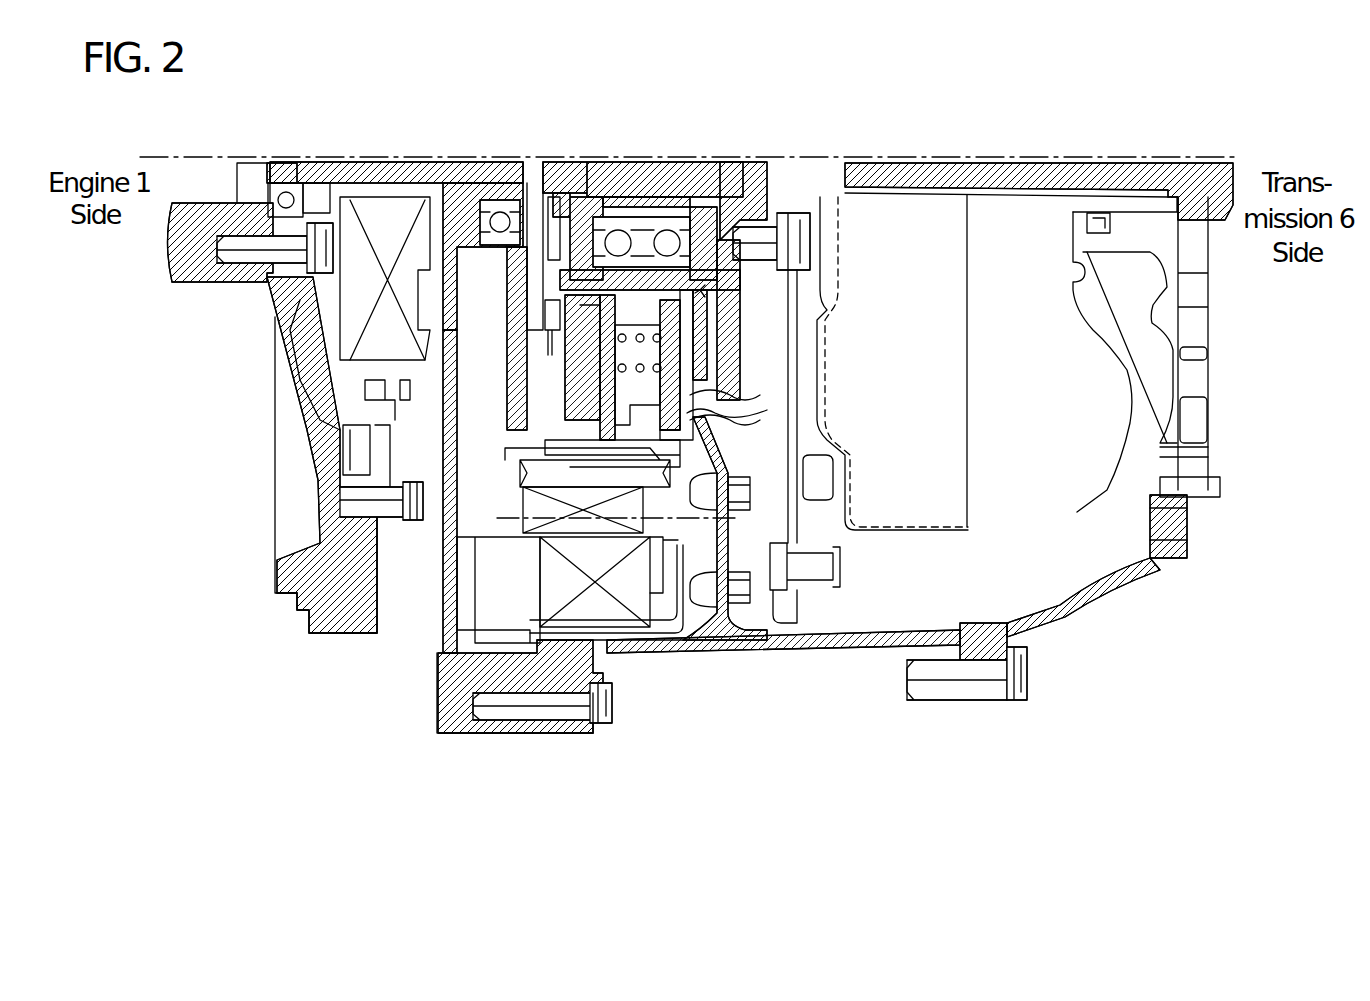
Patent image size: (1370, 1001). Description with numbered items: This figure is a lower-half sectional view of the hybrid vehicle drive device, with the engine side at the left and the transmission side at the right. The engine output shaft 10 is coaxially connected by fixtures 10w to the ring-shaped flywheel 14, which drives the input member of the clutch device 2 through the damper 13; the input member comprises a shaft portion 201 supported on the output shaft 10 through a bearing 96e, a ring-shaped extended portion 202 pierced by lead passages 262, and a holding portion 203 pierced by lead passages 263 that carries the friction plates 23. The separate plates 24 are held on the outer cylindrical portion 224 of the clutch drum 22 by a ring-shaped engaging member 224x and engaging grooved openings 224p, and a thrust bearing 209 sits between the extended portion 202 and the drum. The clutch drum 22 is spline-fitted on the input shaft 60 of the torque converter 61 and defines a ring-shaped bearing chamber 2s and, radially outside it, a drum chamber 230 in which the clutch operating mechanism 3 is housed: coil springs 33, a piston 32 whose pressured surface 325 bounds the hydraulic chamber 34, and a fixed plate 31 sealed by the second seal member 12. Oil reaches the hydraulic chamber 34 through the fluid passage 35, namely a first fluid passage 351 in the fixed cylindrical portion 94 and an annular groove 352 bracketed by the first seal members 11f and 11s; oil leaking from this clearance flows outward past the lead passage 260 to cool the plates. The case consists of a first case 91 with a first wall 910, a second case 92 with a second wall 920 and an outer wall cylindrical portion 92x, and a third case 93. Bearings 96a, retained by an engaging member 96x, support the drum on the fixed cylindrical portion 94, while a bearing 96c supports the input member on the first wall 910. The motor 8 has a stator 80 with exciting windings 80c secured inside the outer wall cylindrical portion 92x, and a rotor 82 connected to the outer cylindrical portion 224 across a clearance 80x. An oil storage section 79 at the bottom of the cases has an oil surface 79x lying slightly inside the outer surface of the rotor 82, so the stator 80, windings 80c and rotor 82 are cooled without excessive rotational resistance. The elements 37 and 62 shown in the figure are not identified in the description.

The clutch device 2 is at (414, 142).
The bearing chamber 2s is at (590, 162).
The clutch operating mechanism 3 is at (790, 157).
The drive motor 8 is at (550, 722).
The output shaft 10 is at (186, 282).
The fixtures 10w is at (250, 263).
The first seal member 11f is at (604, 162).
The first seal member 11s is at (660, 162).
The second seal member 12 is at (545, 318).
The damper 13 is at (330, 380).
The flywheel 14 is at (300, 433).
The clutch drum 22 is at (770, 405).
The friction plates 23 is at (498, 467).
The separate plates 24 is at (520, 455).
The fixed plate 31 is at (665, 365).
The piston 32 is at (660, 600).
The springs 33 is at (760, 322).
The hydraulic chamber 34 is at (645, 600).
The fluid passage 35 is at (760, 385).
The stator 37 is at (595, 581).
The input shaft 60 is at (720, 162).
The torque converter 61 is at (940, 556).
The transmission flange 62 is at (1045, 160).
The oil storage section 79 is at (687, 557).
The oil surface 79x is at (720, 452).
The stator 80 is at (450, 605).
The exciting windings 80c is at (455, 733).
The clearance 80x is at (585, 722).
The rotor 82 is at (455, 592).
The first case 91 is at (496, 733).
The second case 92 is at (765, 272).
The outer wall cylindrical portion 92x is at (870, 655).
The third case 93 is at (1075, 603).
The fixed cylindrical portion 94 is at (760, 250).
The bearings 96a is at (680, 162).
The bearing 96c is at (498, 200).
The bearing 96e is at (288, 183).
The engaging member 96x is at (625, 217).
The shaft portion 201 is at (440, 162).
The extended portion 202 is at (510, 299).
The holding portion 203 is at (415, 350).
The thrust bearing 209 is at (527, 162).
The outer cylindrical portion 224 is at (720, 645).
The engaging grooved openings 224p is at (358, 622).
The engaging member 224x is at (312, 633).
The drum chamber 230 is at (765, 348).
The lead passage 260 is at (566, 162).
The lead passages 262 is at (293, 425).
The lead passages 263 is at (422, 400).
The pressured surface 325 is at (615, 600).
The first fluid passage 351 is at (760, 368).
The annular groove 352 is at (634, 162).
The first wall 910 is at (325, 548).
The second wall 920 is at (770, 305).